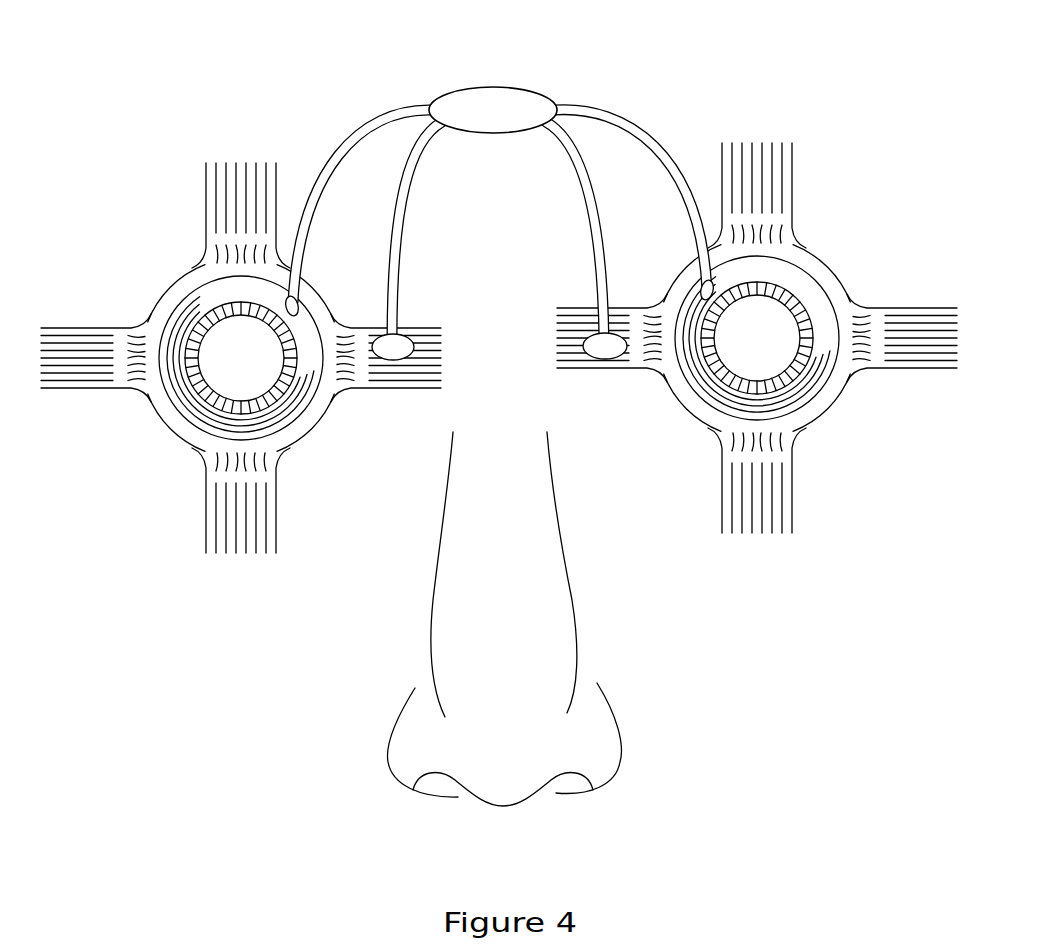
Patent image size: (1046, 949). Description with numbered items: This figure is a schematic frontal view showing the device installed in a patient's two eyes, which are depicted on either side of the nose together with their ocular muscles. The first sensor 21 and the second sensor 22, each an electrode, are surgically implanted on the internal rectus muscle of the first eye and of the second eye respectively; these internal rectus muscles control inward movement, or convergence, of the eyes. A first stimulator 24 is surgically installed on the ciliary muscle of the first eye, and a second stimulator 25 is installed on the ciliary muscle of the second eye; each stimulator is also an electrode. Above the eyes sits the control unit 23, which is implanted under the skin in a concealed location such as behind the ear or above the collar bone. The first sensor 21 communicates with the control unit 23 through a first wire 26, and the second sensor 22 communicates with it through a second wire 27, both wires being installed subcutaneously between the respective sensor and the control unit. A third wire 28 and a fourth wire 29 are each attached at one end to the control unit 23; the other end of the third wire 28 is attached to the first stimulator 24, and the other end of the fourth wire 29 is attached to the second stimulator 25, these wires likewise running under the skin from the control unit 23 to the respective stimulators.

The first sensor 21 is at (395, 352).
The second sensor 22 is at (603, 353).
The control unit 23 is at (493, 90).
The first stimulator 24 is at (297, 297).
The second stimulator 25 is at (705, 287).
The first wire 26 is at (405, 170).
The second wire 27 is at (575, 157).
The third wire 28 is at (335, 155).
The fourth wire 29 is at (642, 133).